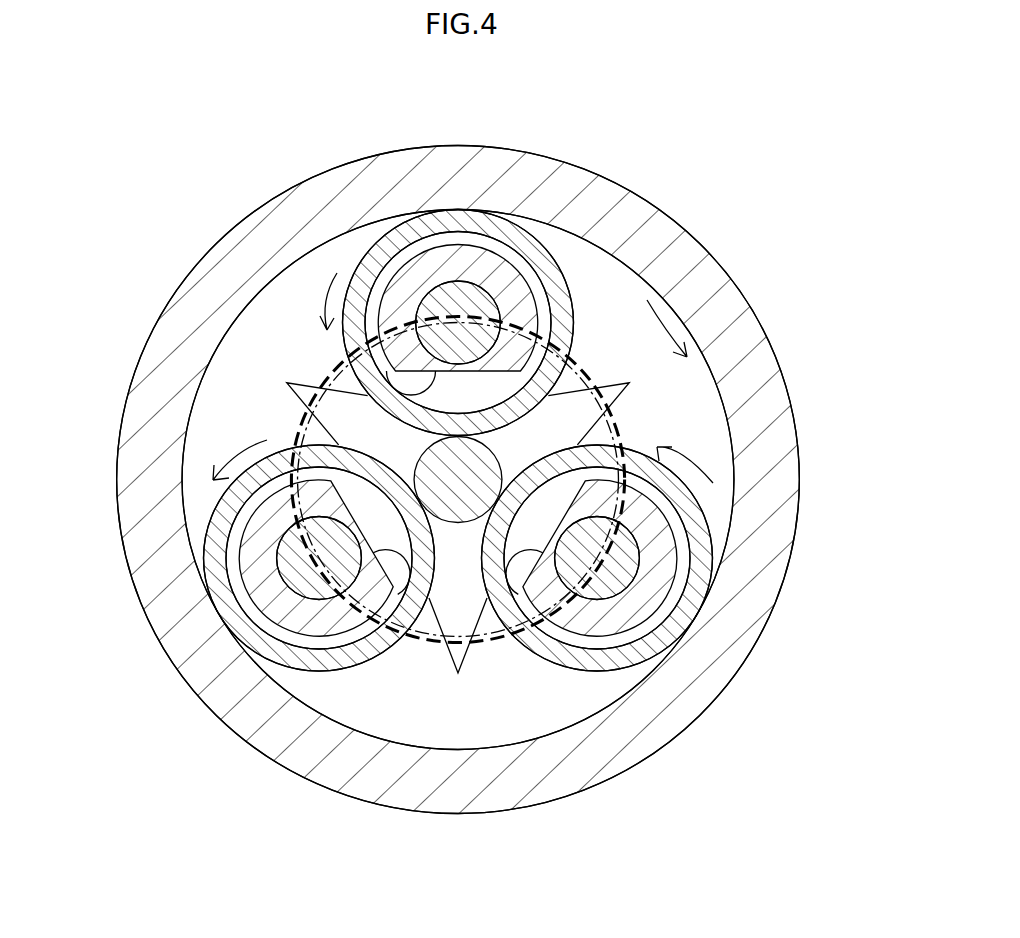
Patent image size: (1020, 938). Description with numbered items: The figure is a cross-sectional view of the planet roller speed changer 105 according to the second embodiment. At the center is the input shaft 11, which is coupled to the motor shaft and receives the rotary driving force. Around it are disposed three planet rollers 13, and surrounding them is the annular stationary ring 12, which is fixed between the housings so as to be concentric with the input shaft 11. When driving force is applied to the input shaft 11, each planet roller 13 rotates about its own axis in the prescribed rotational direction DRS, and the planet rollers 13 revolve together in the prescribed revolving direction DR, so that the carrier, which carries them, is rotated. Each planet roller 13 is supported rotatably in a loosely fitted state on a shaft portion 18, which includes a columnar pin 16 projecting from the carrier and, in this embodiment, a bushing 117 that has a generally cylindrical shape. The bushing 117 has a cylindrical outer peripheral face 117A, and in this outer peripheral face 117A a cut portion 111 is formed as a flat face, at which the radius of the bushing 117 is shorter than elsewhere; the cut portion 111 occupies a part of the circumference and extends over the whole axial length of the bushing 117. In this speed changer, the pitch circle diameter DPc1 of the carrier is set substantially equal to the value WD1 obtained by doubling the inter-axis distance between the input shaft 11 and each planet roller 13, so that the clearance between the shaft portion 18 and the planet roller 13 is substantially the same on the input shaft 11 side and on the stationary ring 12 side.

The planet roller speed changer 105 is at (706, 173).
The stationary ring 12 is at (458, 800).
The planet roller 13 is at (566, 306).
The shaft portion 18 is at (480, 105).
The bushing 117 is at (413, 277).
The outer peripheral face 117A is at (562, 290).
The pin 16 is at (455, 305).
The input shaft 11 is at (472, 460).
The cut portion 111 is at (300, 387).
The value obtained by doubling the inter-axis distance WD1 is at (593, 387).
The pitch circle diameter of the carrier DPc1 is at (613, 415).
The revolving direction DR is at (670, 322).
The rotational direction DRS is at (300, 289).